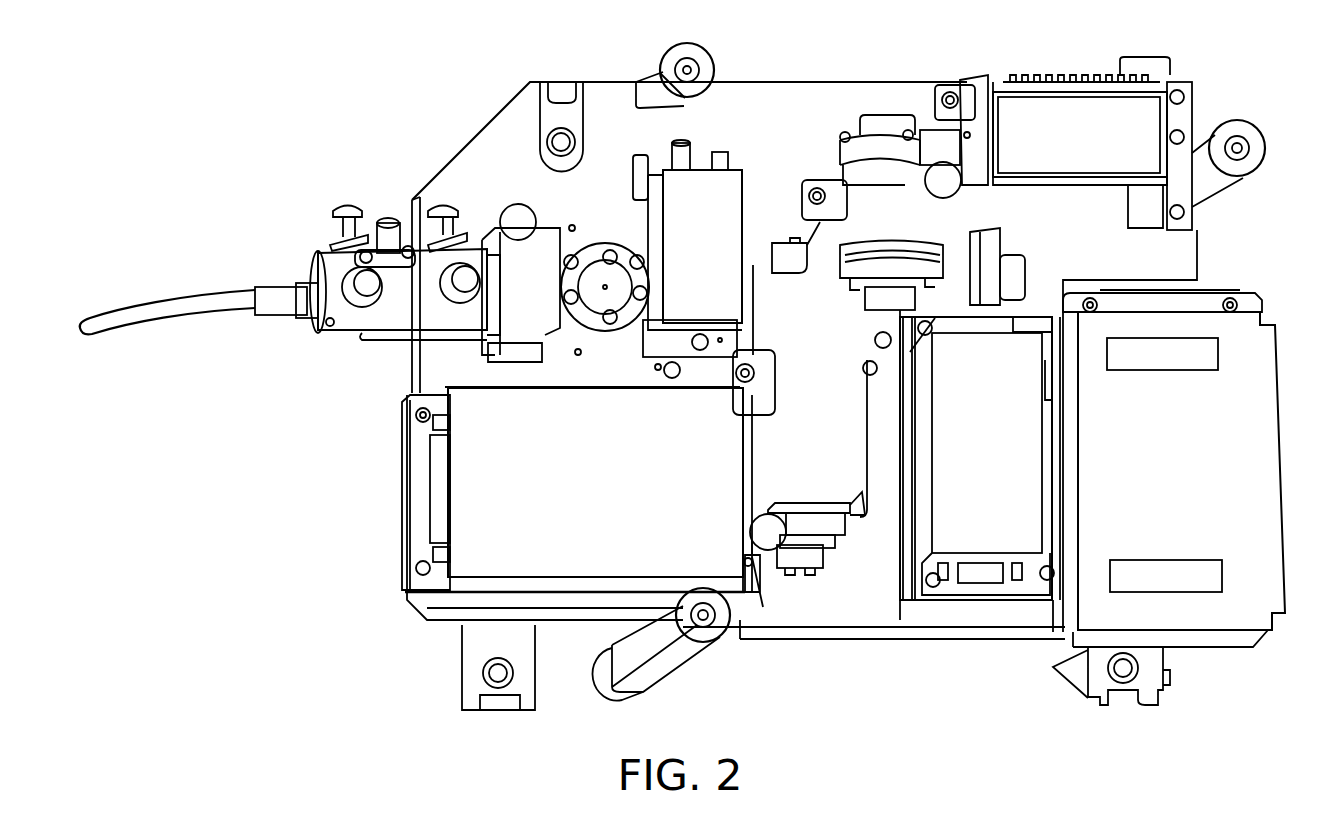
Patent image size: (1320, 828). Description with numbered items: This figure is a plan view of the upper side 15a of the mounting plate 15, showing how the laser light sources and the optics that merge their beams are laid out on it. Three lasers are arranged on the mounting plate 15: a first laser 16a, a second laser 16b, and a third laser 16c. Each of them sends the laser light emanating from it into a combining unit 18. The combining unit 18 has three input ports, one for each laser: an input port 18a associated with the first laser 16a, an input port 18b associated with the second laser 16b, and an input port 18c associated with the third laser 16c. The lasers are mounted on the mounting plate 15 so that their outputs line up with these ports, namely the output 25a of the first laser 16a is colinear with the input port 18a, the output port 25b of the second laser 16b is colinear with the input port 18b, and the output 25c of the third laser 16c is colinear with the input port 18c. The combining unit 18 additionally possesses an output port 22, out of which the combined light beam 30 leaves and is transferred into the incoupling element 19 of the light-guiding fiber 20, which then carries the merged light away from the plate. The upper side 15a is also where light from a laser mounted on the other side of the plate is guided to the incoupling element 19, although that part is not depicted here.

The mounting plate 15 is at (468, 138).
The upper side of the mounting plate 15a is at (820, 102).
The first laser 16a is at (1137, 128).
The second laser 16b is at (987, 528).
The third laser 16c is at (487, 483).
The combining unit 18 is at (897, 190).
The input port 18a is at (900, 130).
The input port 18b is at (988, 257).
The input port 18c is at (813, 553).
The incoupling element 19 is at (395, 318).
The light-guiding fiber 20 is at (178, 302).
The output port 22 is at (782, 258).
The output of first laser 25a is at (980, 167).
The output port of second laser 25b is at (1013, 278).
The output of third laser 25c is at (747, 567).
The combined light beam 30 is at (632, 255).